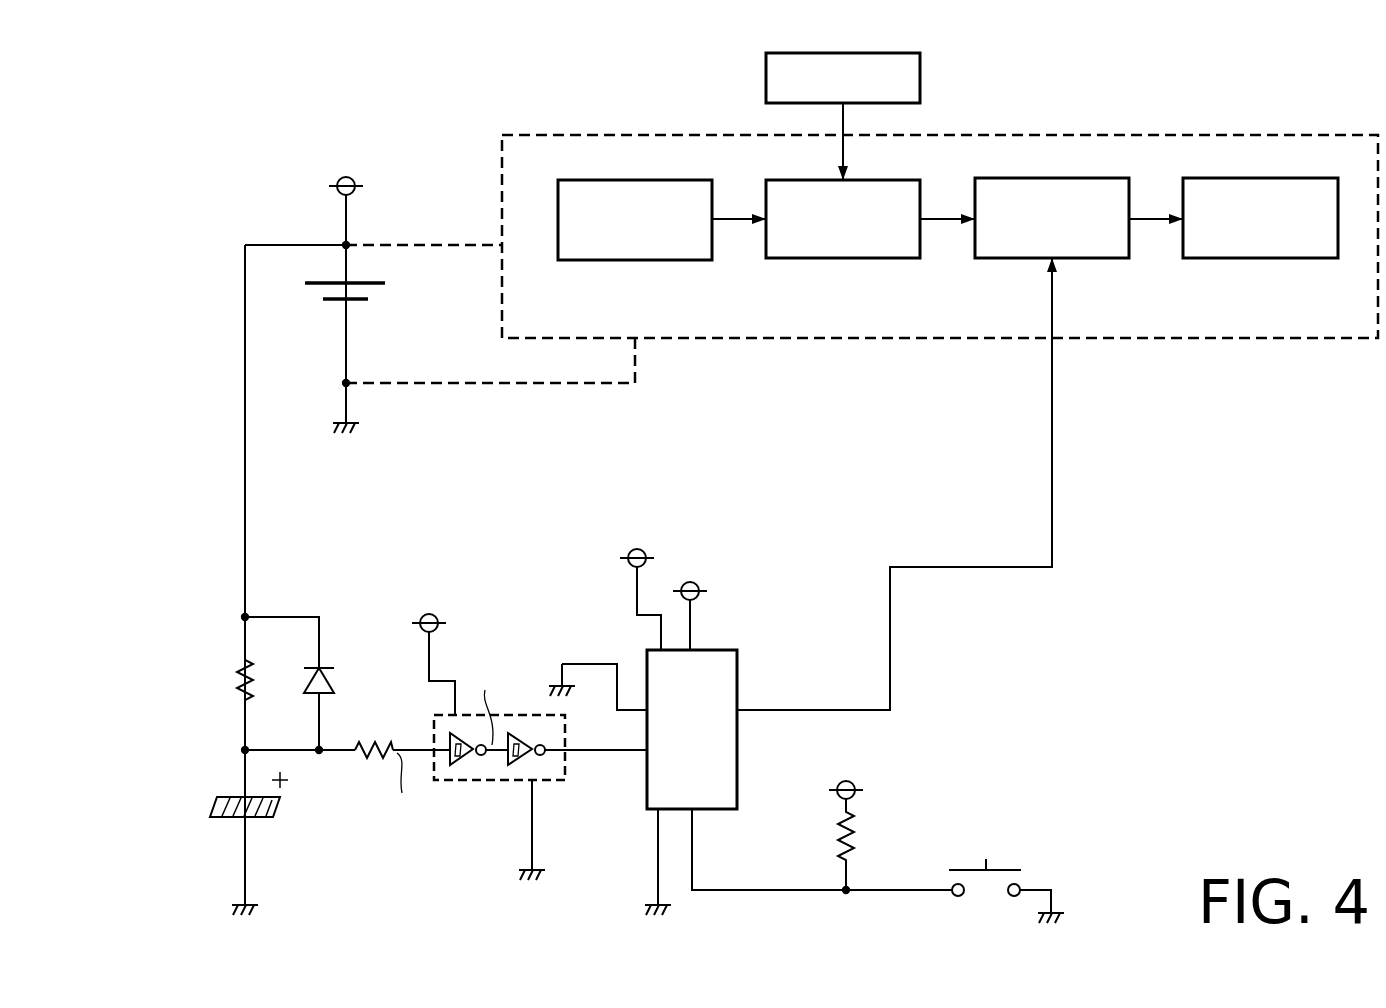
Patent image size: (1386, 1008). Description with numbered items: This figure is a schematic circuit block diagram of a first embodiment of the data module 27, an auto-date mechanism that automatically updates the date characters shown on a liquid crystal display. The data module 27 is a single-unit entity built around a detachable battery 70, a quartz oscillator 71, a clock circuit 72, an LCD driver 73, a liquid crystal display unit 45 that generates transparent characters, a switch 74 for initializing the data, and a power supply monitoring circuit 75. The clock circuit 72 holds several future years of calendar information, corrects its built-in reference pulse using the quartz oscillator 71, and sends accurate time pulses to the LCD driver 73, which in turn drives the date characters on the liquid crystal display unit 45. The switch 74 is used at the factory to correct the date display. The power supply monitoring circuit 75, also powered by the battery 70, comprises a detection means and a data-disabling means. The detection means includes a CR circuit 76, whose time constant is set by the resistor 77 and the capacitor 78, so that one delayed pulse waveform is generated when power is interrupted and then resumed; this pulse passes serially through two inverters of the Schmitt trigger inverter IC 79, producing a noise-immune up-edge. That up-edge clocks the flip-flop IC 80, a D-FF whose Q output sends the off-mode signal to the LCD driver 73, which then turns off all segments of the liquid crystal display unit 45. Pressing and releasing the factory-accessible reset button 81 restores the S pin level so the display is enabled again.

The data module 27 is at (203, 95).
The battery 70 is at (370, 283).
The quartz oscillator 71 is at (632, 260).
The clock circuit 72 is at (800, 258).
The LCD driver 73 is at (1088, 258).
The liquid crystal display unit 45 is at (1318, 258).
The switch 74 is at (920, 75).
The power supply monitoring circuit 75 is at (797, 527).
The CR circuit 76 is at (186, 648).
The resistor 77 is at (237, 686).
The capacitor 78 is at (212, 800).
The Schmitt trigger inverter IC 79 is at (488, 782).
The flip-flop IC 80 is at (737, 663).
The reset button 81 is at (973, 859).